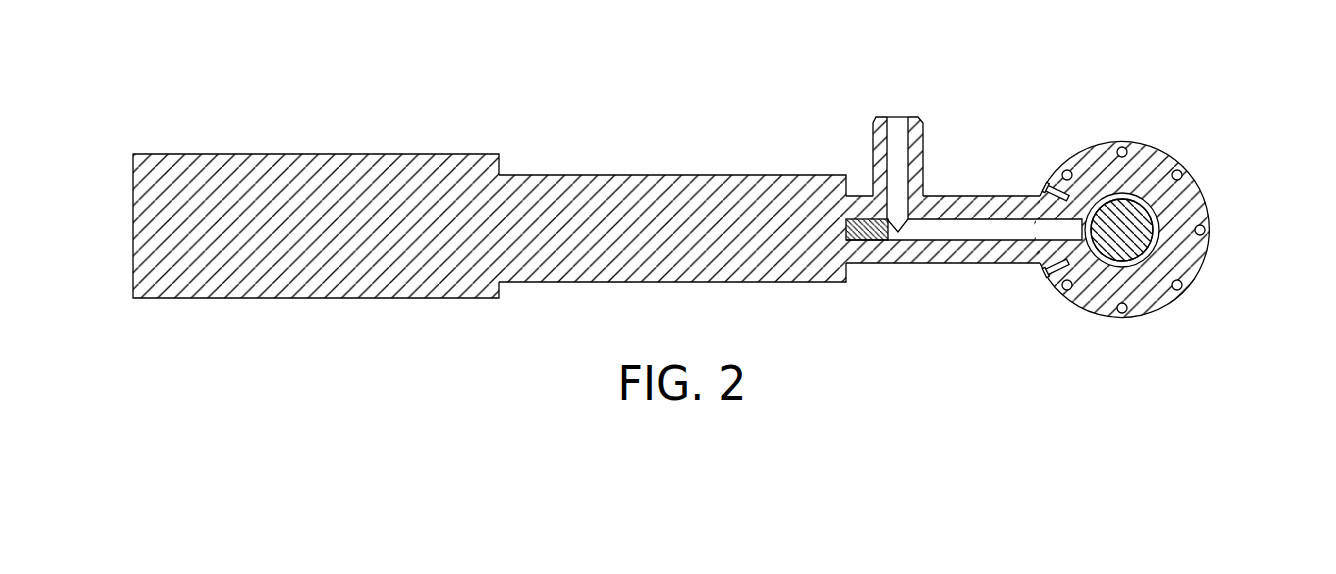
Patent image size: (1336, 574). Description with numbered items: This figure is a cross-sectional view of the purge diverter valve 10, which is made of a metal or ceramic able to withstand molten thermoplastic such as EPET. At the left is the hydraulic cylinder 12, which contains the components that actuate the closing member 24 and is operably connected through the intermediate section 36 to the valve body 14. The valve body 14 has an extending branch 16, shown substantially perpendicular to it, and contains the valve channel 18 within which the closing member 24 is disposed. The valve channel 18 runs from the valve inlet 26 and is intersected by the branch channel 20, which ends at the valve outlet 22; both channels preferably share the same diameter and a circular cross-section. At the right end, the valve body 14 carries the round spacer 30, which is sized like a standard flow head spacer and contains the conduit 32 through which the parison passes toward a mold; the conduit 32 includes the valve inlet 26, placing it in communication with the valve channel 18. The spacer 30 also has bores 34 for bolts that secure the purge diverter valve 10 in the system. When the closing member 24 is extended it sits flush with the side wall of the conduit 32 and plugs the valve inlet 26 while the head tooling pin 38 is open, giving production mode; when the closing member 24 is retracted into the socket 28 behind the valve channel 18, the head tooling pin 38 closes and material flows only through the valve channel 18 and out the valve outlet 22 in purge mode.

The purge diverter valve 10 is at (714, 135).
The hydraulic cylinder 12 is at (250, 180).
The valve body 14 is at (1012, 208).
The branch 16 is at (877, 140).
The valve channel 18 is at (980, 230).
The branch channel 20 is at (900, 140).
The valve outlet 22 is at (896, 117).
The closing member 24 is at (1048, 228).
The valve inlet 26 is at (1100, 256).
The socket 28 is at (860, 233).
The spacer 30 is at (1152, 293).
The conduit 32 is at (1160, 235).
The bores 34 is at (1178, 172).
The intermediate section 36 is at (585, 192).
The head tooling pin 38 is at (1130, 227).